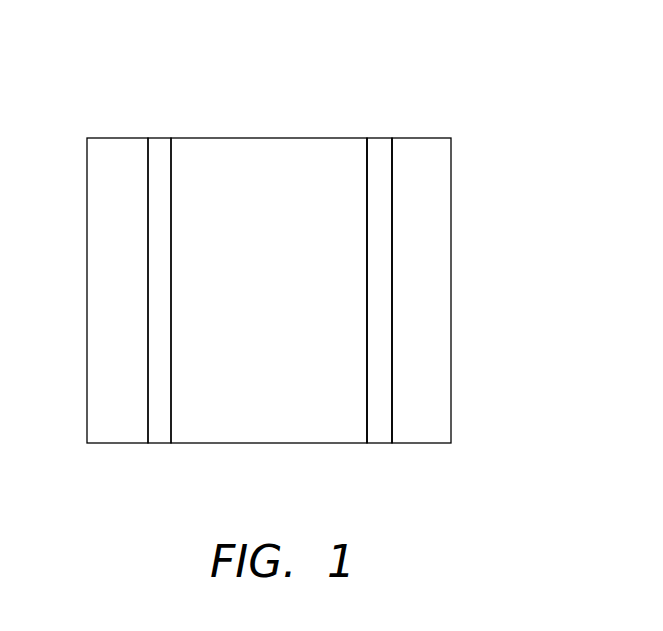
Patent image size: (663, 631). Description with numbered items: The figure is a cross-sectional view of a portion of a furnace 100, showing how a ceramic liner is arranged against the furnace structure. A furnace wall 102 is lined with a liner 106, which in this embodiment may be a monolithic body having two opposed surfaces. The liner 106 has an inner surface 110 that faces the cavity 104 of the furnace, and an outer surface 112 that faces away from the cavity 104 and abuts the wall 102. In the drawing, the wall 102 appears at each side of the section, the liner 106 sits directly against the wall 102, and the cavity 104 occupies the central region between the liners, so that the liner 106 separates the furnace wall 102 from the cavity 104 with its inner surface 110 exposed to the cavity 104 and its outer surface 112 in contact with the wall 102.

The furnace 100 is at (520, 38).
The furnace wall 102 is at (115, 152).
The cavity 104 is at (293, 156).
The liner 106 is at (160, 435).
The inner surface 110 is at (367, 273).
The outer surface 112 is at (395, 208).